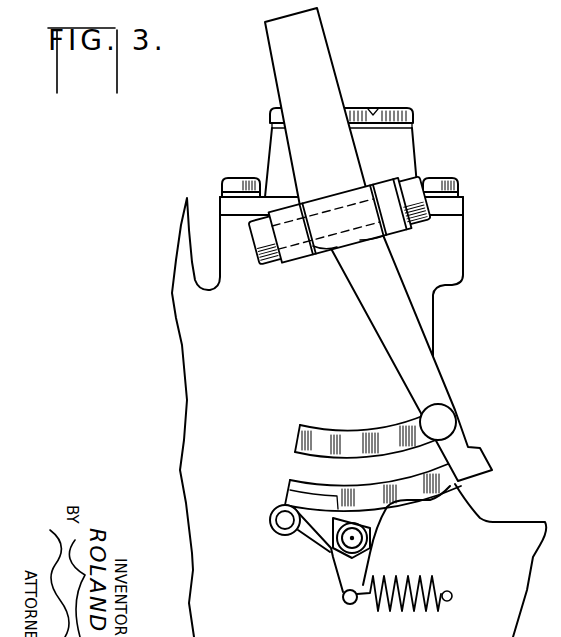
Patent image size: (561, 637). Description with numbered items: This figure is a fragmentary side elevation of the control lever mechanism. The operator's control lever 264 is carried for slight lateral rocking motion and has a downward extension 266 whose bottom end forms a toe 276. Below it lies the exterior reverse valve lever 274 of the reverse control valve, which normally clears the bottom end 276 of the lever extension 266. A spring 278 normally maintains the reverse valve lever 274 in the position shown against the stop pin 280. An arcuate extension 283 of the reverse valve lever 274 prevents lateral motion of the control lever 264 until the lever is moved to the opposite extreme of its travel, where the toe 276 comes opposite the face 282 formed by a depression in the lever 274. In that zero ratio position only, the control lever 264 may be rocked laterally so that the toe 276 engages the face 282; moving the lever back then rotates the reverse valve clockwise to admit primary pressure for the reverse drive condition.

The operator's control lever 264 is at (317, 52).
The downward extension 266 is at (417, 363).
The reverse valve lever 274 is at (383, 510).
The bottom end 276 is at (480, 460).
The spring 278 is at (440, 577).
The stop pin 280 is at (282, 522).
The face 282 is at (290, 482).
The arcuate extension 283 is at (462, 485).